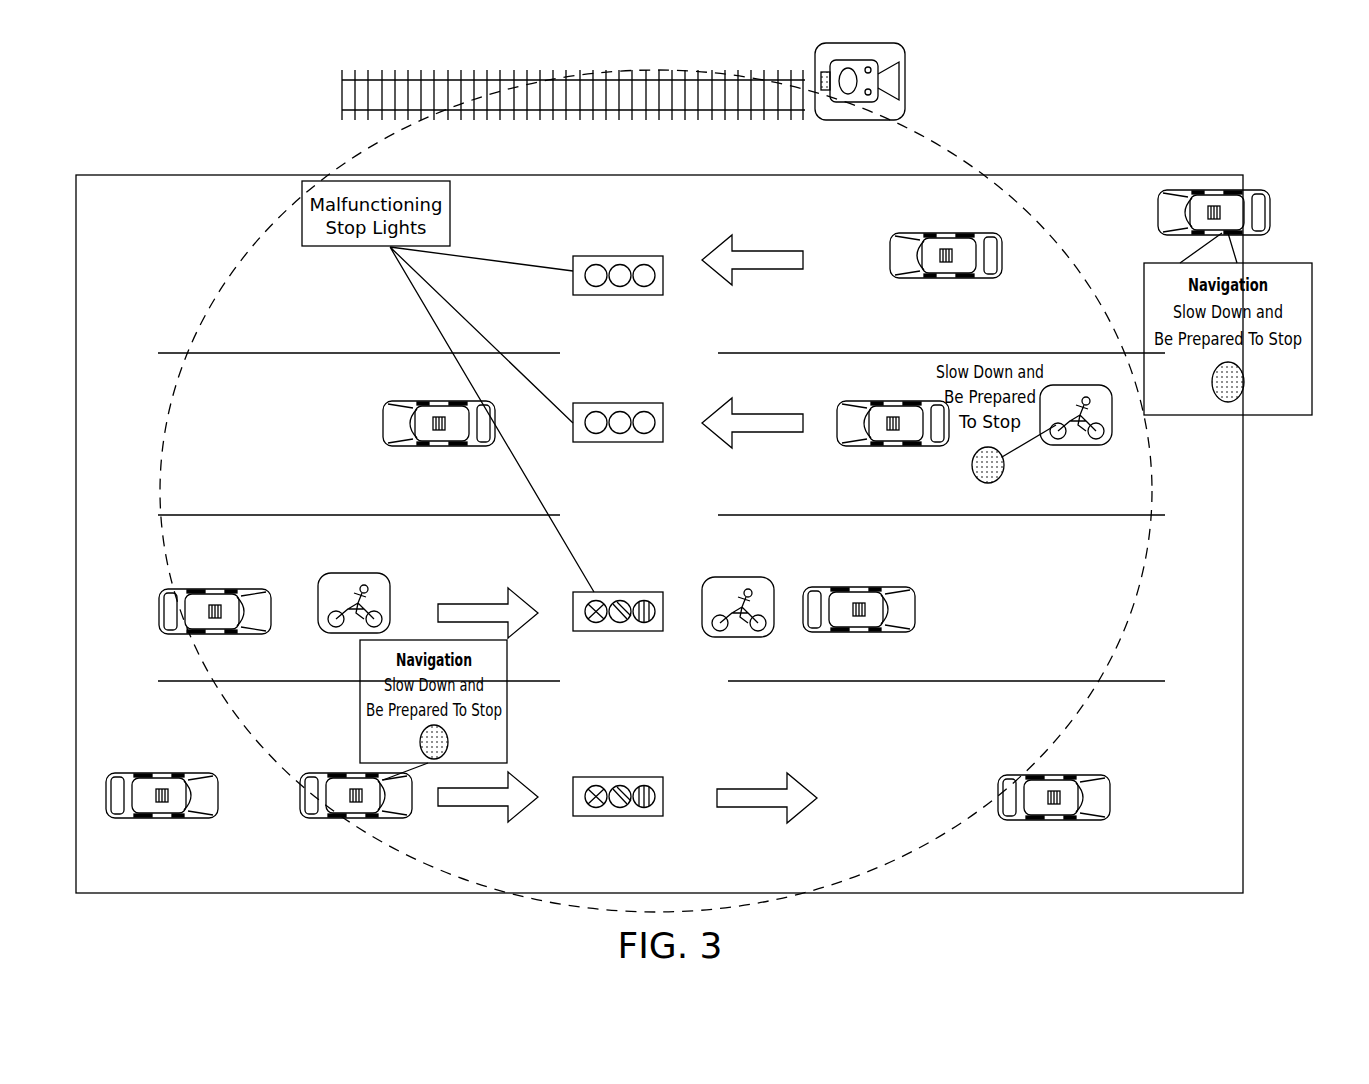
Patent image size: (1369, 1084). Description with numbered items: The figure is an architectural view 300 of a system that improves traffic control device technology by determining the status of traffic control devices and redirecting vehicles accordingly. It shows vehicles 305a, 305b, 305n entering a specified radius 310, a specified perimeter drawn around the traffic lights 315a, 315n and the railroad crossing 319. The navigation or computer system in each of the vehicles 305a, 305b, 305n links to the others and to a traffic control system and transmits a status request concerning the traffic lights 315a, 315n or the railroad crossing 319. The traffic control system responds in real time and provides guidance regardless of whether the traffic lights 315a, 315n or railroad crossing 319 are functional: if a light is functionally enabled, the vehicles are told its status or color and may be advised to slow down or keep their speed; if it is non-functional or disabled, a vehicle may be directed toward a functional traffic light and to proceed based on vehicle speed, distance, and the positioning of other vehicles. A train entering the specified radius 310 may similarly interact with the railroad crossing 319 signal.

The architectural view 300 is at (1258, 134).
The vehicle 305a is at (383, 424).
The vehicle 305b is at (392, 590).
The vehicle 305n is at (1086, 775).
The specified radius 310 is at (976, 151).
The traffic light 315a is at (634, 592).
The traffic light 315n is at (620, 777).
The railroad crossing 319 is at (322, 92).